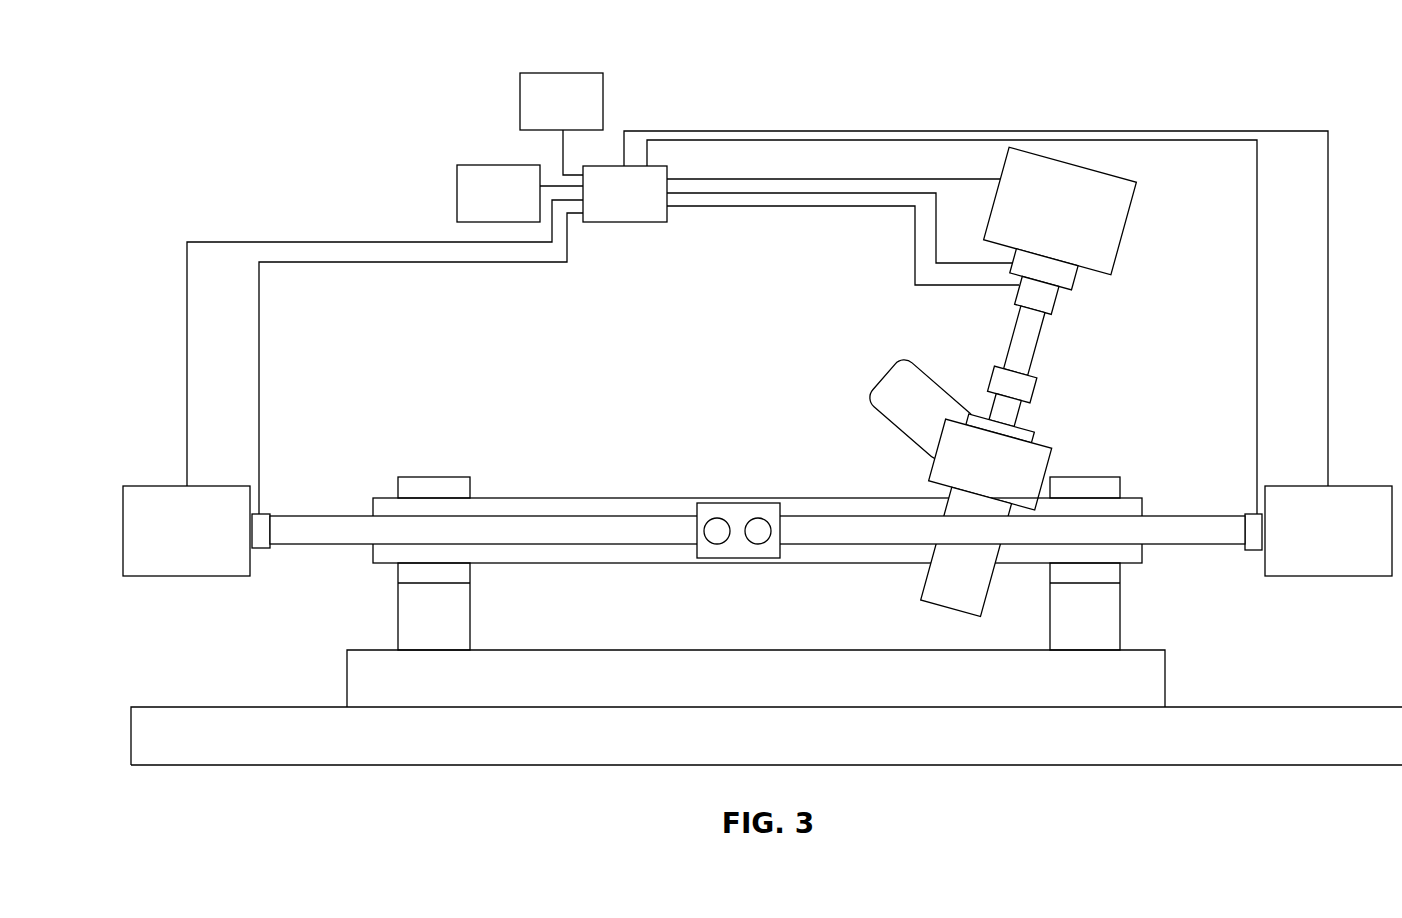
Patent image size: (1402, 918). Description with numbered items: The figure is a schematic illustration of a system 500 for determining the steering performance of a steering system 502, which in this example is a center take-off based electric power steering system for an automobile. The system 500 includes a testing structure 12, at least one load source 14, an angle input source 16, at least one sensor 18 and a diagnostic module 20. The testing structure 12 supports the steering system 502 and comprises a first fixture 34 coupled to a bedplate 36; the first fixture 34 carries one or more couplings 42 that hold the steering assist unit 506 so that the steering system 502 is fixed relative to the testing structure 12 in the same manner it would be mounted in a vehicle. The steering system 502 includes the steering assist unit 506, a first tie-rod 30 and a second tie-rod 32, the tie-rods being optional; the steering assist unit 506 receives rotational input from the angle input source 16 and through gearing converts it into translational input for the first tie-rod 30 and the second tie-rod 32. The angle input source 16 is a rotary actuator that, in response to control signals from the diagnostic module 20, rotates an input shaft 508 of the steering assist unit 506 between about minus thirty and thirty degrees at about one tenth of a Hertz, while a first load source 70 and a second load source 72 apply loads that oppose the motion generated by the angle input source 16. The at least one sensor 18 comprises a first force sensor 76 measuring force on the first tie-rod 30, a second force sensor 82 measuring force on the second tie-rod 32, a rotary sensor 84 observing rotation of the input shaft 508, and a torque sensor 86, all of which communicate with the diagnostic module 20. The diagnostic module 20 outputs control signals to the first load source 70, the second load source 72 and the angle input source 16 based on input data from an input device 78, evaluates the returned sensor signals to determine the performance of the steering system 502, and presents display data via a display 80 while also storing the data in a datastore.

The testing structure 12 is at (1322, 677).
The at least one load source 14 is at (163, 437).
The angle input source 16 is at (1060, 211).
The at least one sensor 18 is at (1053, 330).
The diagnostic module 20 is at (645, 222).
The first tie-rod 30 is at (334, 516).
The second tie-rod 32 is at (1182, 516).
The first fixture 34 is at (1176, 678).
The bedplate 36 is at (1272, 766).
The one or more couplings 42 is at (393, 594).
The first load source 70 is at (187, 577).
The second load source 72 is at (1327, 576).
The first force sensor 76 is at (260, 548).
The input device 78 is at (548, 73).
The display 80 is at (487, 165).
The second force sensor 82 is at (1256, 552).
The rotary sensor 84 is at (1037, 295).
The torque sensor 86 is at (1044, 269).
The system 500 is at (1276, 90).
The steering system 502 is at (1024, 340).
The steering assist unit 506 is at (967, 391).
The input shaft 508 is at (1012, 384).